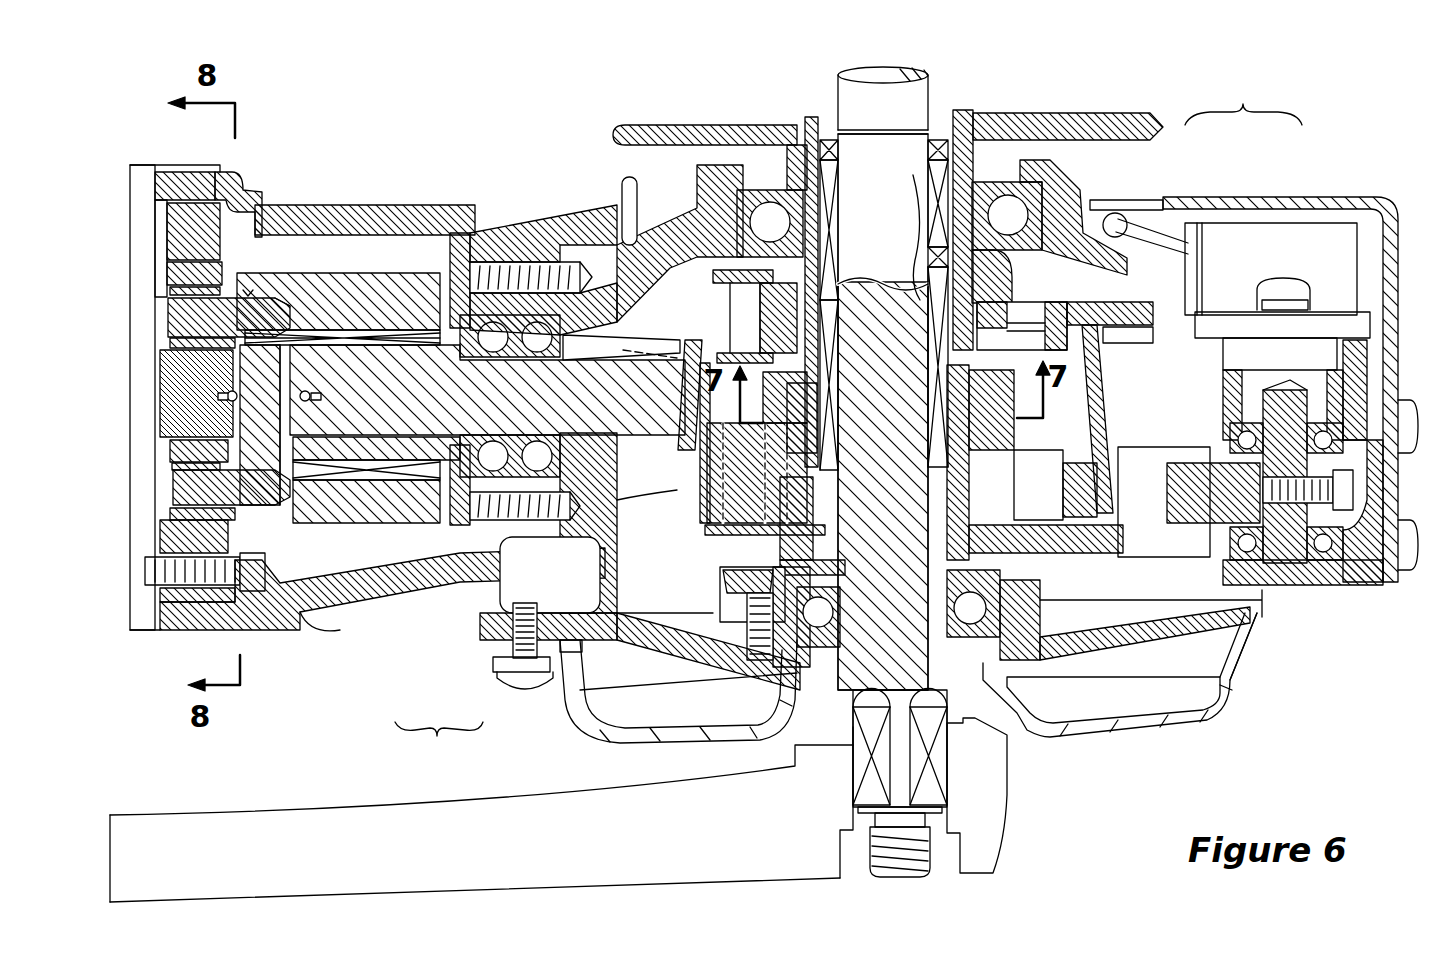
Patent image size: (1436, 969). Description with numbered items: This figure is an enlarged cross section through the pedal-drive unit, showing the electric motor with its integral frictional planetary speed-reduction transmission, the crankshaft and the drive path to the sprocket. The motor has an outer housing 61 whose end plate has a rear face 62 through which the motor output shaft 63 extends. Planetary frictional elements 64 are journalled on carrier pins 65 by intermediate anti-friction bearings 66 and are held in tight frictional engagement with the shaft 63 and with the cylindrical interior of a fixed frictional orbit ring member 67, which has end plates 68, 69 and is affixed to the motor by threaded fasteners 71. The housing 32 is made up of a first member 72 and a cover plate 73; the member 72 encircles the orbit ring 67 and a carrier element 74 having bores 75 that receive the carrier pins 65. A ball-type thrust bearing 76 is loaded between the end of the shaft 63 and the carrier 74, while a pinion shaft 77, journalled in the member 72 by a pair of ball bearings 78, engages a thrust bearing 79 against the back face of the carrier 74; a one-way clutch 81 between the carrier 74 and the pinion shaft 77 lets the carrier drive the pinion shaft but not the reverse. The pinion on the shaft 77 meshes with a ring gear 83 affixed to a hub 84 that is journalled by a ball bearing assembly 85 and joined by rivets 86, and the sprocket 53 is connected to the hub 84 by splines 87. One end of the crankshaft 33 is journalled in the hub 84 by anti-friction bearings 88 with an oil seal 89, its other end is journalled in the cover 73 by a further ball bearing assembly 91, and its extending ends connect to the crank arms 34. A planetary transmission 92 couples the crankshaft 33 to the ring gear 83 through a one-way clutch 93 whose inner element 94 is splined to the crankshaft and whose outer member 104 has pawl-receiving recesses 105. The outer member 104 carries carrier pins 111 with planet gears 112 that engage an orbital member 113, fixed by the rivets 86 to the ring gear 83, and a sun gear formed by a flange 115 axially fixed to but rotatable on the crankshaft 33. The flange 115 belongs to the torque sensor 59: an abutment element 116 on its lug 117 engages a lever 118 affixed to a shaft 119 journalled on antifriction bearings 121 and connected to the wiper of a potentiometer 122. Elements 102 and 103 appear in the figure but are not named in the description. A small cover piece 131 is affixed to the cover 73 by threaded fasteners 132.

The housing 32 is at (439, 742).
The crankshaft 33 is at (980, 780).
The crank arms 34 is at (265, 812).
The sprocket 53 is at (620, 128).
The torque sensor 59 is at (1243, 108).
The motor housing 61 is at (145, 632).
The rear face 62 is at (170, 195).
The electric motor output shaft 63 is at (175, 405).
The planetary frictional elements 64 is at (175, 270).
The carrier pins 65 is at (185, 305).
The anti-friction bearings 66 is at (175, 340).
The fixed frictional orbit ring member 67 is at (160, 240).
The end plate 68 is at (165, 215).
The end plate 69 is at (247, 290).
The threaded fasteners 71 is at (257, 590).
The housing member 72 is at (437, 615).
The cover plate 73 is at (475, 625).
The carrier element 74 is at (268, 210).
The bores 75 is at (280, 270).
The ball-type thrust bearing 76 is at (305, 500).
The pinion shaft 77 is at (400, 330).
The ball bearings 78 is at (540, 320).
The thrust bearing 79 is at (385, 400).
The one-way clutch 81 is at (313, 292).
The ring gear 83 is at (640, 300).
The hub 84 is at (808, 125).
The ball bearing assembly 85 is at (768, 217).
The rivets 86 is at (775, 272).
The splines 87 is at (800, 120).
The anti-friction bearings 88 is at (912, 260).
The oil seal 89 is at (828, 125).
The ball bearing assembly 91 is at (820, 655).
The planetary transmission 92 is at (700, 512).
The one-way clutch 93 is at (795, 312).
The inner element 94 is at (815, 442).
The clutch plate 102 is at (830, 398).
The bracket 103 is at (1000, 325).
The outer member 104 is at (1080, 305).
The recesses 105 is at (1090, 468).
The carrier pins 111 is at (1045, 512).
The planet gears 112 is at (700, 530).
The orbital member 113 is at (605, 553).
The flange 115 is at (683, 653).
The abutment element 116 is at (1190, 525).
The lug 117 is at (1110, 545).
The lever 118 is at (1202, 450).
The shaft 119 is at (1280, 555).
The antifriction bearings 121 is at (1340, 445).
The potentiometer 122 is at (1263, 240).
The cover piece 131 is at (618, 740).
The threaded fasteners 132 is at (522, 682).